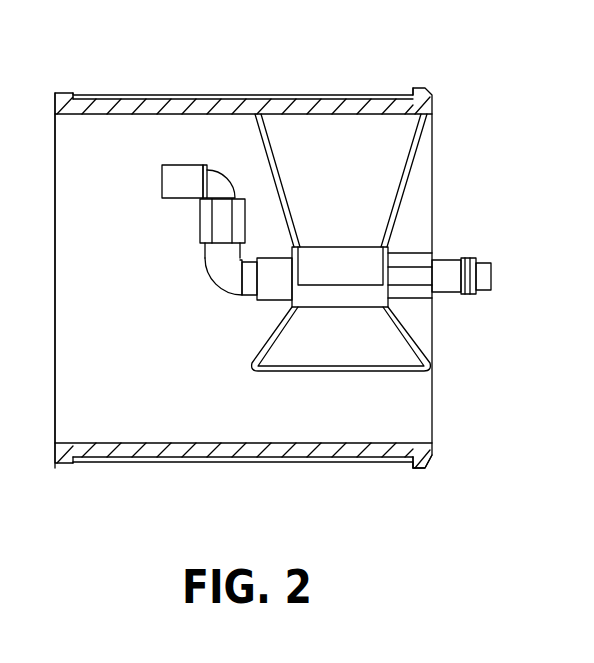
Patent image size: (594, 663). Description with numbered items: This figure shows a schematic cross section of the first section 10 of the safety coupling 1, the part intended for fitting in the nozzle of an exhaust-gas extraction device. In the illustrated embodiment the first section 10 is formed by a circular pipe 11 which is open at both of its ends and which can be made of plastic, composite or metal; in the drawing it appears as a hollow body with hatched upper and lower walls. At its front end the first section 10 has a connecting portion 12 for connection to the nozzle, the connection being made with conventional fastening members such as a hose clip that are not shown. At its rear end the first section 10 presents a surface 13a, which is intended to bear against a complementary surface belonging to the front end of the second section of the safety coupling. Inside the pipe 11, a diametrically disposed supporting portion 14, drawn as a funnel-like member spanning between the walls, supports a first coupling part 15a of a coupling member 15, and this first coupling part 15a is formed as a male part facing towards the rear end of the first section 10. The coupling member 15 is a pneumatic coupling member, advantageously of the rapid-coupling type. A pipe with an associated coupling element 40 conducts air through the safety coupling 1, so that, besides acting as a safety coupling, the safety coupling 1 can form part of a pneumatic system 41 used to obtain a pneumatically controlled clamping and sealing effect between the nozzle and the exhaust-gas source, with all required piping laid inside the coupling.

The safety coupling 1 is at (425, 72).
The first section 10 is at (280, 88).
The circular pipe 11 is at (125, 110).
The connecting portion 12 is at (60, 466).
The surface 13a is at (432, 445).
The supporting portion 14 is at (362, 158).
The coupling member 15 is at (455, 210).
The first coupling part 15a is at (483, 258).
The coupling element 40 is at (222, 275).
The pneumatic system 41 is at (205, 225).